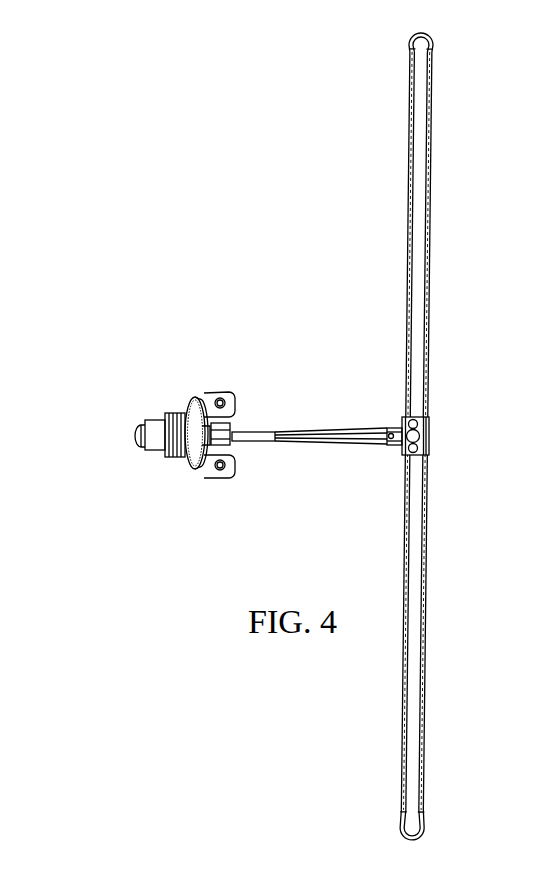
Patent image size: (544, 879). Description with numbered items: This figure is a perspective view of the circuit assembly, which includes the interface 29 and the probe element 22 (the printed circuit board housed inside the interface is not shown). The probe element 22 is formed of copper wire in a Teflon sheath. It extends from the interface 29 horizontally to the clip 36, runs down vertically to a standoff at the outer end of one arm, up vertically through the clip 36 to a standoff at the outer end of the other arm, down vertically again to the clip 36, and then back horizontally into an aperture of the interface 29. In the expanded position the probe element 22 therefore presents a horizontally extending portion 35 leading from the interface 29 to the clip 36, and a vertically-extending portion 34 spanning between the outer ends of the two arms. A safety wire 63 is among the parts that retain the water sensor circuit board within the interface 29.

The probe element 22 is at (285, 212).
The interface 29 is at (203, 389).
The vertically-extending portion 34 is at (437, 225).
The horizontally extending portion 35 is at (345, 452).
The clip 36 is at (436, 432).
The safety wire 63 is at (535, 465).